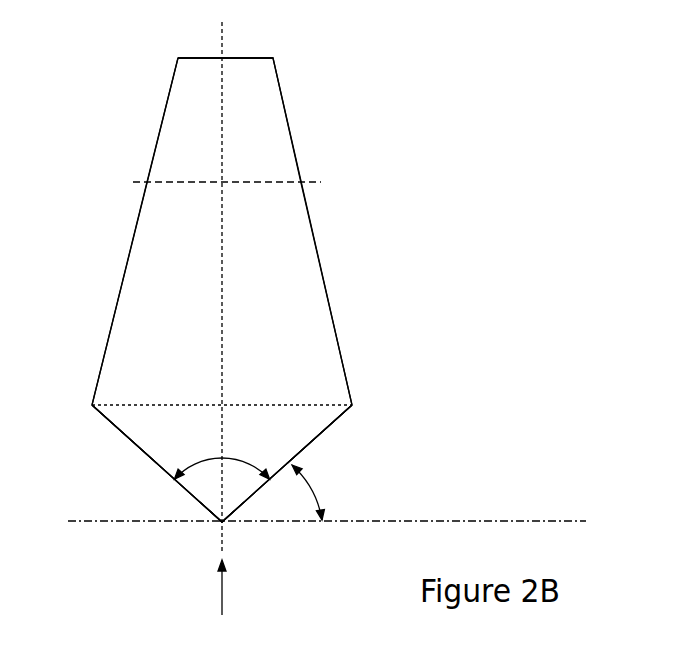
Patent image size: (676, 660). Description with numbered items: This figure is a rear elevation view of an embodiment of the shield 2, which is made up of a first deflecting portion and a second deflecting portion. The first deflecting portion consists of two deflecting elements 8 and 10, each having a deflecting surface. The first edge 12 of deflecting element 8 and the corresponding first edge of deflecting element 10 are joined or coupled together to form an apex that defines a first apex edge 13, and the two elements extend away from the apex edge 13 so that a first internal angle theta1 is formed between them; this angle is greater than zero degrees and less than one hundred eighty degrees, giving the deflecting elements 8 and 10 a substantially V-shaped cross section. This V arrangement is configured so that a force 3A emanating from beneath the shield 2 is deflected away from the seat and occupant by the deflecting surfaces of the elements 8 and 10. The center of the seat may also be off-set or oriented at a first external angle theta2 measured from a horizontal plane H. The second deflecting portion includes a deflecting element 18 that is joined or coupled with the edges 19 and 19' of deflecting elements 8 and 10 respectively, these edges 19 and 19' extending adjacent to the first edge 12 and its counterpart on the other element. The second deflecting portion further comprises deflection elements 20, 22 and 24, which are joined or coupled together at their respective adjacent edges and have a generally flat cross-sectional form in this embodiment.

The shield 2 is at (452, 160).
The deflection element 24 is at (200, 57).
The deflection element 22 is at (268, 128).
The deflection element 20 is at (293, 343).
The deflecting element 8 is at (142, 452).
The edge 19 is at (97, 434).
The edge 19' is at (361, 431).
The deflecting element 18 is at (330, 430).
The deflecting element 10 is at (285, 432).
The first apex edge 13 is at (224, 523).
The first edge 12 is at (220, 522).
The force 3A is at (222, 597).
The horizontal plane H is at (542, 521).
The first internal angle theta1 is at (221, 447).
The first external angle theta2 is at (310, 487).